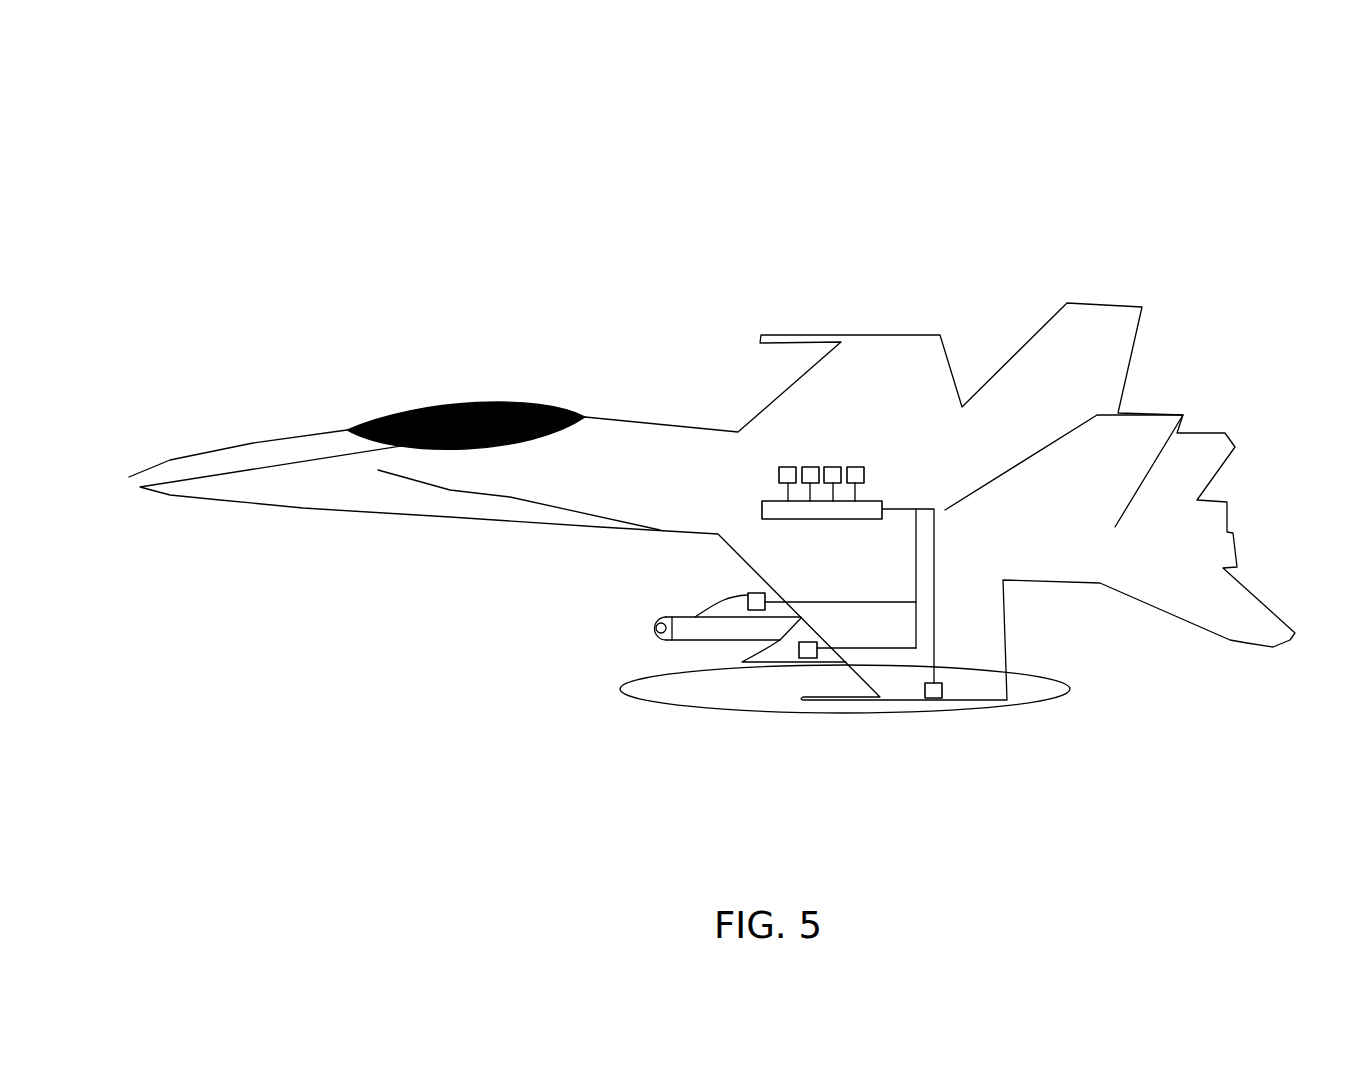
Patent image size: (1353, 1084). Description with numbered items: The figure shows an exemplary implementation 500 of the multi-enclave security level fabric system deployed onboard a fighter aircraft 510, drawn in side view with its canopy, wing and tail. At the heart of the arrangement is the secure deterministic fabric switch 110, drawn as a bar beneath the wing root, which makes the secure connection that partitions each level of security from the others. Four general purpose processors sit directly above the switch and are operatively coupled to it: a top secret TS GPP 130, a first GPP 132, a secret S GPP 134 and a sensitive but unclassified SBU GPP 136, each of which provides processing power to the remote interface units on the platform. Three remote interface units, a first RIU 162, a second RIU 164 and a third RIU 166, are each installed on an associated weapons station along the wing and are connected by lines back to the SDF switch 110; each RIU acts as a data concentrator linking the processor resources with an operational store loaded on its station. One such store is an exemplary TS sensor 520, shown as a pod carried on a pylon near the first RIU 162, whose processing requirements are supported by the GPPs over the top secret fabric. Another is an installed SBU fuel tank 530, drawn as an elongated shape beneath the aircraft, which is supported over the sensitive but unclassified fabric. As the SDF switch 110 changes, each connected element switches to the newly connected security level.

The implementation 500 is at (172, 162).
The fighter aircraft 510 is at (268, 443).
The secure deterministic fabric switch 110 is at (763, 512).
The TS GPP 130 is at (787, 465).
The first GPP 132 is at (810, 465).
The S GPP 134 is at (838, 465).
The SBU GPP 136 is at (860, 465).
The first RIU 162 is at (755, 592).
The second RIU 164 is at (807, 660).
The third RIU 166 is at (930, 700).
The TS sensor 520 is at (655, 632).
The SBU fuel tank 530 is at (620, 688).